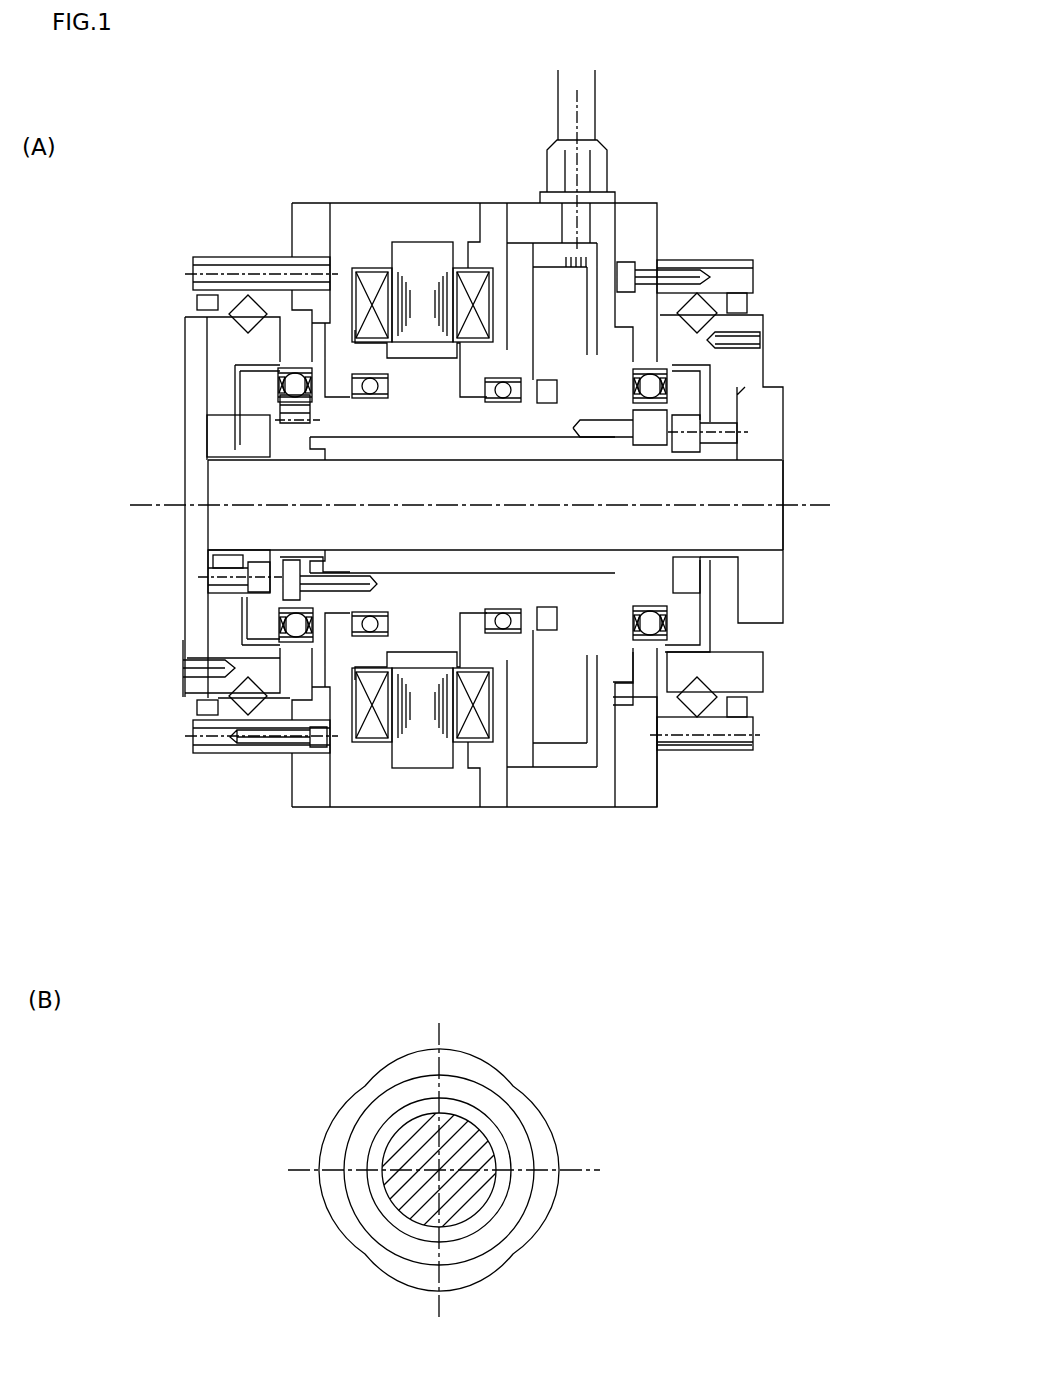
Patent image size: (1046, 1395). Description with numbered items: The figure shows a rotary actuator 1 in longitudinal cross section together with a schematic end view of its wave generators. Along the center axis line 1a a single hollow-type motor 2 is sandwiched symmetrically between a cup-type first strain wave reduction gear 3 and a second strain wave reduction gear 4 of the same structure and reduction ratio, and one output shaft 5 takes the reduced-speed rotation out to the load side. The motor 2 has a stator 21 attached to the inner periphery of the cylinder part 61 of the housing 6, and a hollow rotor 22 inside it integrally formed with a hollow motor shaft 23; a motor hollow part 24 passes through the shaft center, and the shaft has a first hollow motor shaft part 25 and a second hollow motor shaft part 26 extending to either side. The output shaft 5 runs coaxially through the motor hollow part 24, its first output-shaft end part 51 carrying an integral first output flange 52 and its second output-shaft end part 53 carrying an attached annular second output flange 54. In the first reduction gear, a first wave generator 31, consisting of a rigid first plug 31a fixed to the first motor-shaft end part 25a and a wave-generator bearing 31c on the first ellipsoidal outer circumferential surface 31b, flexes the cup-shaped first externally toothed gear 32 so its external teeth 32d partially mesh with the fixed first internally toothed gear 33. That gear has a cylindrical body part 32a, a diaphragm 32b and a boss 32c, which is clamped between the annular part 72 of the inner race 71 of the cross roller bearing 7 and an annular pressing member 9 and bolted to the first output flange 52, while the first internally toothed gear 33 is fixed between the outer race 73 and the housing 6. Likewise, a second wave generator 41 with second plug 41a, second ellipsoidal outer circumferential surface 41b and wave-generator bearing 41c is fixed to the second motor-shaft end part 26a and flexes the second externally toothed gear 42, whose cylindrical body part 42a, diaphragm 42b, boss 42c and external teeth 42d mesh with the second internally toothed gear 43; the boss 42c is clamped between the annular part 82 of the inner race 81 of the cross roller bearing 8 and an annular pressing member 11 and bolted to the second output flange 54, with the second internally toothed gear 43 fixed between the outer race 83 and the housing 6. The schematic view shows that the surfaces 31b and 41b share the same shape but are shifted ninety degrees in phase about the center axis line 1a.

The rotary actuator 1 is at (293, 156).
The center axis line 1a is at (822, 504).
The hollow-type motor 2 is at (392, 190).
The first strain wave reduction gear 3 is at (230, 237).
The second strain wave reduction gear 4 is at (690, 228).
The output shaft 5 is at (478, 456).
The housing 6 is at (448, 202).
The cylinder part 61 is at (421, 212).
The cross roller bearing 7 is at (91, 728).
The inner race 71 is at (216, 688).
The annular part 72 is at (225, 594).
The outer race 73 is at (220, 759).
The cross roller bearing 8 is at (858, 770).
The inner race 81 is at (735, 677).
The annular part 82 is at (728, 580).
The outer race 83 is at (720, 721).
The annular pressing member 9 is at (240, 440).
The annular pressing member 11 is at (690, 560).
The stator 21 is at (461, 758).
The hollow rotor 22 is at (473, 659).
The hollow motor shaft 23 is at (479, 619).
The motor hollow part 24 is at (538, 564).
The first hollow motor shaft part 25 is at (348, 604).
The first motor-shaft end part 25a is at (318, 598).
The second hollow motor shaft part 26 is at (597, 591).
The second motor-shaft end part 26a is at (634, 676).
The first wave generator 31 is at (97, 625).
The first plug 31a is at (262, 620).
The first ellipsoidal outer circumferential surface 31b is at (385, 1076).
The wave-generator bearing 31c is at (258, 648).
The first externally toothed gear 32 is at (97, 330).
The cylindrical body part 32a is at (270, 365).
The diaphragm 32b is at (240, 377).
The boss 32c is at (228, 432).
The external teeth 32d is at (282, 353).
The first internally toothed gear 33 is at (302, 355).
The second wave generator 41 is at (851, 600).
The second plug 41a is at (712, 592).
The second ellipsoidal outer circumferential surface 41b is at (672, 626).
The wave-generator bearing 41c is at (712, 652).
The second externally toothed gear 42 is at (862, 300).
The cylindrical body part 42a is at (666, 362).
The diaphragm 42b is at (712, 378).
The boss 42c is at (720, 418).
The external teeth 42d is at (654, 352).
The second internally toothed gear 43 is at (644, 343).
The first output-shaft end part 51 is at (236, 493).
The first output flange 52 is at (222, 582).
The second output-shaft end part 53 is at (724, 493).
The second output flange 54 is at (788, 562).